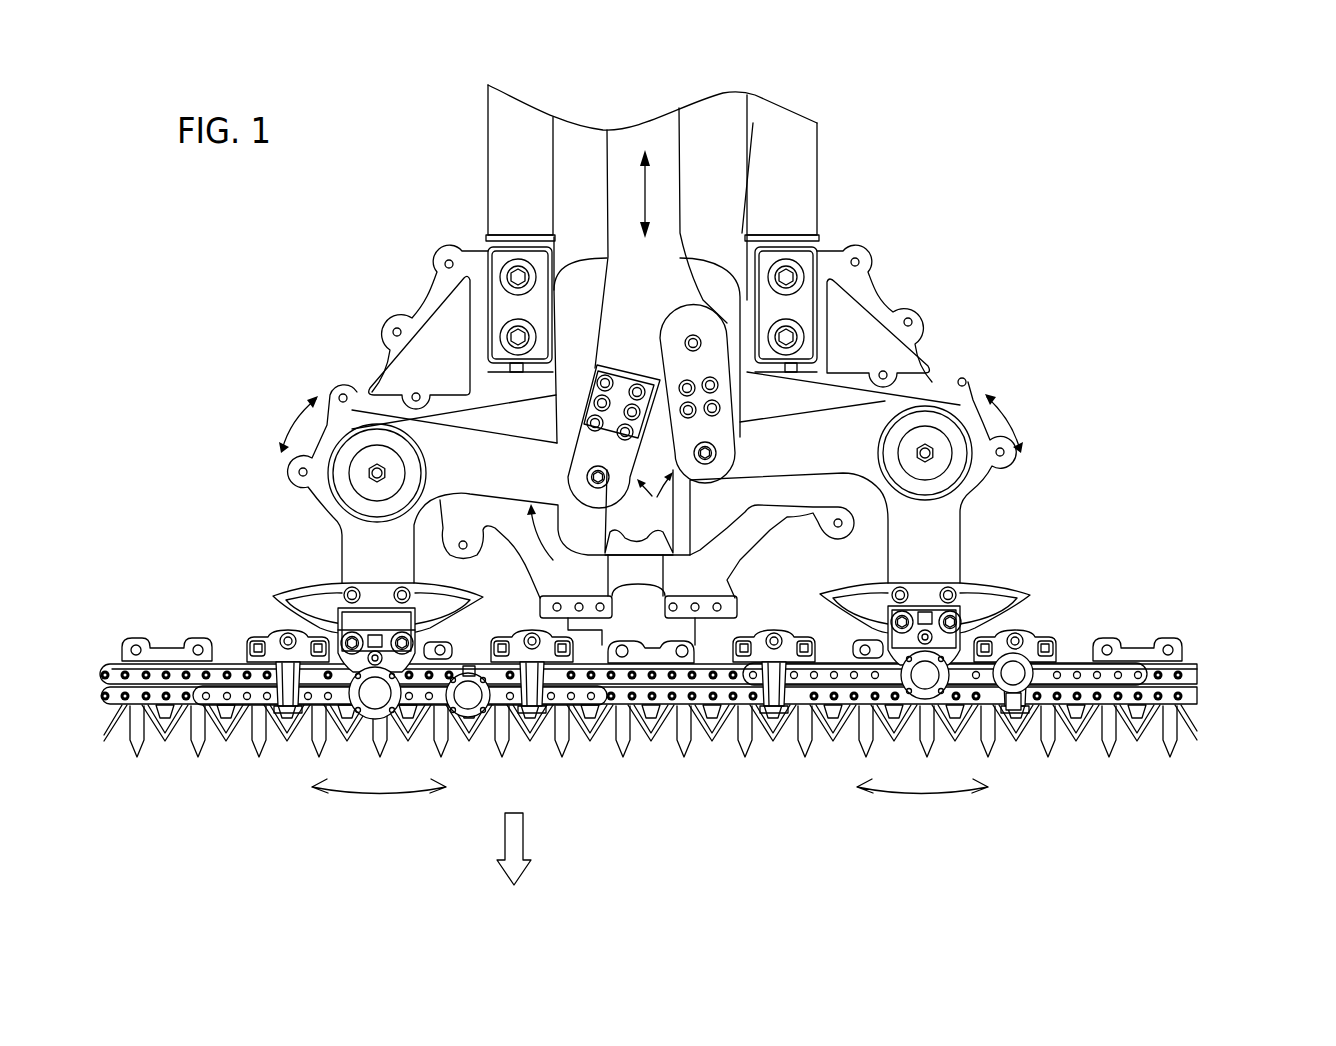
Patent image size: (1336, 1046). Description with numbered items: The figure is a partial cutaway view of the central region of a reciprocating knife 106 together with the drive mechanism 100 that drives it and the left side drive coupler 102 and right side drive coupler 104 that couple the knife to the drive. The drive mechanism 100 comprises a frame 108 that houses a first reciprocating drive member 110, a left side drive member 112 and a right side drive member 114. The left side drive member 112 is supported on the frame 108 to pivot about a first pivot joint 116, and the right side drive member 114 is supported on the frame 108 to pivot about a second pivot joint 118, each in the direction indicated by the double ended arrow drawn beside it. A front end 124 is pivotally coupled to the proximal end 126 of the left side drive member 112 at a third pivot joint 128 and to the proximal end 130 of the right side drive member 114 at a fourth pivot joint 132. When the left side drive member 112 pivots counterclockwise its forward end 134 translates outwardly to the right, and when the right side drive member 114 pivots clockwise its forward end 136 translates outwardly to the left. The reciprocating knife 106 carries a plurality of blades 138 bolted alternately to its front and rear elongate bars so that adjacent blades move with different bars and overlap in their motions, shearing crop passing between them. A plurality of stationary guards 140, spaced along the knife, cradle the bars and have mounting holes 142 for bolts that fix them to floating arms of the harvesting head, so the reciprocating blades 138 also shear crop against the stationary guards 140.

The drive mechanism 100 is at (965, 193).
The left side drive coupler 102 is at (965, 677).
The right side drive coupler 104 is at (333, 705).
The reciprocating knife 106 is at (1224, 689).
The frame 108 is at (920, 357).
The first reciprocating drive member 110 is at (683, 150).
The left side drive member 112 is at (930, 535).
The right side drive member 114 is at (355, 563).
The first pivot joint 116 is at (933, 457).
The second pivot joint 118 is at (380, 460).
The front end 124 is at (652, 498).
The proximal end 126 is at (735, 487).
The third pivot joint 128 is at (722, 447).
The proximal end 130 is at (558, 545).
The fourth pivot joint 132 is at (590, 478).
The forward end 134 is at (907, 741).
The forward end 136 is at (367, 741).
The plurality of blades 138 is at (773, 747).
The plurality of stationary guards 140 is at (197, 762).
The mounting holes 142 is at (200, 638).